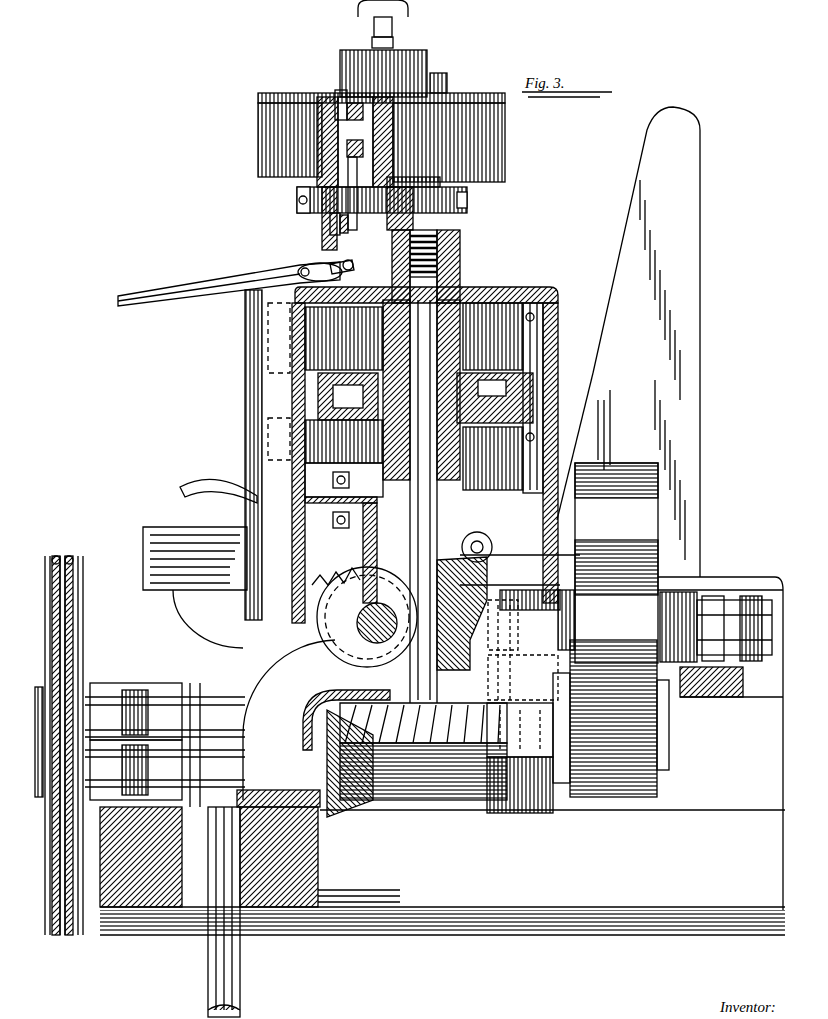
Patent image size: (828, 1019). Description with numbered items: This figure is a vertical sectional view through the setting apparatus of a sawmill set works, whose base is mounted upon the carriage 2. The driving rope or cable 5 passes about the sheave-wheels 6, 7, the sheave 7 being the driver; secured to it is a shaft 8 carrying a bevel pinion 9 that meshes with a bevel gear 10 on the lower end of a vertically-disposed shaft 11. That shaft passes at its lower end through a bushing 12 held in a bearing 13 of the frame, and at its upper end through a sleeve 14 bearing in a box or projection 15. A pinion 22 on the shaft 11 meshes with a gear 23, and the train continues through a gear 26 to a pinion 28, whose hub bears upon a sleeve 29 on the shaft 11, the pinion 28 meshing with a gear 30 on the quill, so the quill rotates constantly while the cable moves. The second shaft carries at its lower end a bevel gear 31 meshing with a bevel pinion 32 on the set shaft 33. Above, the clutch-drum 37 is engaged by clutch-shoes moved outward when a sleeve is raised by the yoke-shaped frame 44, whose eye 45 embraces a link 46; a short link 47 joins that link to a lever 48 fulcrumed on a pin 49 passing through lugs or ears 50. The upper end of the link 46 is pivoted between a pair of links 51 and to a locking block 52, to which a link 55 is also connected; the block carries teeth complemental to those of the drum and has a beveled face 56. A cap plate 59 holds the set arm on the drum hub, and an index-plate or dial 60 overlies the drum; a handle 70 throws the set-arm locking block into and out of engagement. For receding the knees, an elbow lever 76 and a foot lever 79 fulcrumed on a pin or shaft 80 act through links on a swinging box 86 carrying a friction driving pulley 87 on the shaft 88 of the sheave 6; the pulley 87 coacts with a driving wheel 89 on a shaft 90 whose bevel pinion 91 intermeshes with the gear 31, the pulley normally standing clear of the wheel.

The carriage 2 is at (136, 905).
The driving rope or cable 5 is at (82, 630).
The sheave-wheel 6 is at (84, 585).
The sheave-wheel 7 is at (82, 650).
The shaft 8 is at (206, 810).
The bevel pinion 9 is at (352, 818).
The bevel gear 10 is at (452, 745).
The vertically-disposed shaft 11 is at (425, 500).
The bushing 12 is at (335, 683).
The bearing 13 is at (355, 655).
The sleeve 14 is at (460, 272).
The box or projection 15 is at (460, 240).
The pinion 22 is at (445, 462).
The gear 23 is at (305, 435).
The gear 26 is at (550, 380).
The pinion 28 is at (492, 322).
The sleeve 29 is at (472, 300).
The gear 30 is at (305, 330).
The bevel gear 31 is at (305, 540).
The bevel pinion 32 is at (298, 585).
The set shaft 33 is at (364, 617).
The clutch-drum 37 is at (505, 150).
The yoke-shaped frame 44 is at (297, 200).
The eye 45 is at (330, 222).
The link 46 is at (317, 165).
The short link 47 is at (330, 264).
The lever 48 is at (205, 290).
The pin 49 is at (300, 288).
The lugs or ears 50 is at (300, 273).
The links 51 is at (347, 148).
The locking block 52 is at (258, 112).
The link 55 is at (357, 103).
The beveled face 56 is at (335, 95).
The cap plate 59 is at (420, 58).
The index-plate or dial 60 is at (458, 95).
The handle 70 is at (394, 30).
The elbow lever 76 is at (333, 520).
The foot lever 79 is at (222, 494).
The pin or shaft 80 is at (479, 534).
The swinging box 86 is at (490, 776).
The friction driving pulley 87 is at (660, 710).
The shaft 88 is at (196, 708).
The driving wheel 89 is at (616, 563).
The shaft 90 is at (672, 602).
The bevel pinion 91 is at (575, 612).